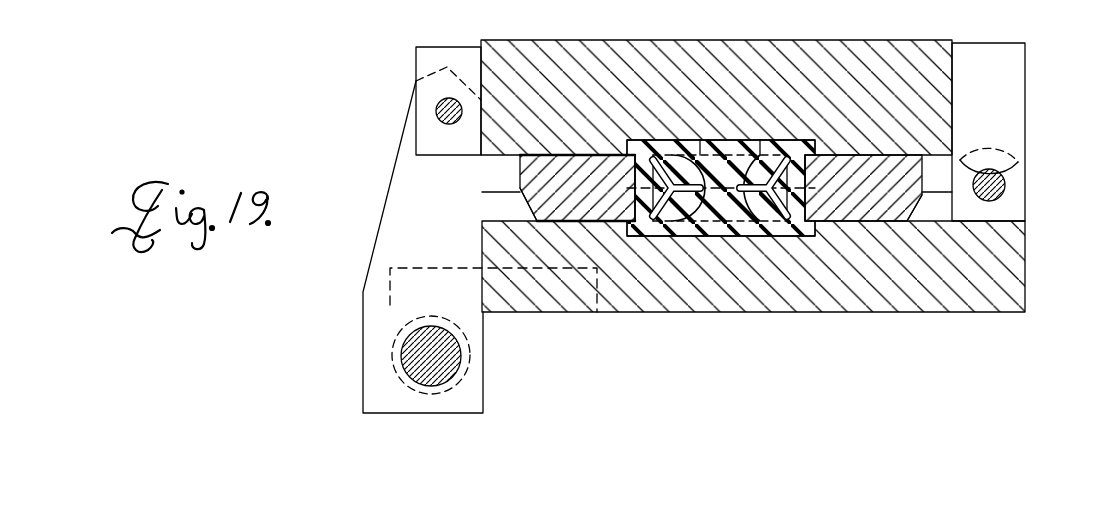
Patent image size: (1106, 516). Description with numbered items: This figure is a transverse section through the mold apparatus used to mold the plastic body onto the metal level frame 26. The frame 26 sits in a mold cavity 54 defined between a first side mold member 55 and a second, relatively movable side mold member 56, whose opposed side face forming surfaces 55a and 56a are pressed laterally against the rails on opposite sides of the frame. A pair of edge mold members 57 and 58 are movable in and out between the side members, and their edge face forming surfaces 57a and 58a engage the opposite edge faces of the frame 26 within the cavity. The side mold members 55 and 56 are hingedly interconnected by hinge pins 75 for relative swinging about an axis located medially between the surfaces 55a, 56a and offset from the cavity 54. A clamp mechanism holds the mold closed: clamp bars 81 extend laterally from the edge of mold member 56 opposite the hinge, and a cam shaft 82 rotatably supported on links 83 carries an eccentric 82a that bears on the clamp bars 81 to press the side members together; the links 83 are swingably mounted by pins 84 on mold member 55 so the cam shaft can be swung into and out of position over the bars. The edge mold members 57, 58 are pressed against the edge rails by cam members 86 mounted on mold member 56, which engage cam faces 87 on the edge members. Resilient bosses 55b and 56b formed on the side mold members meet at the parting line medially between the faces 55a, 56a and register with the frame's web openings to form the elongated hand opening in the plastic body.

The metal level frame 26 is at (672, 220).
The mold cavity 54 is at (670, 162).
The first side mold member 55 is at (947, 20).
The side face forming surface 55a is at (777, 155).
The boss 55b is at (727, 155).
The second side mold member 56 is at (827, 294).
The side face forming surface 56a is at (777, 210).
The boss 56b is at (715, 213).
The edge mold member 57 is at (870, 207).
The edge face forming surface 57a is at (790, 182).
The edge mold member 58 is at (578, 208).
The edge face forming surface 58a is at (640, 180).
The hinge pin 75 is at (1000, 190).
The clamp bar 81 is at (420, 310).
The cam shaft 82 is at (443, 371).
The eccentric 82a is at (468, 334).
The link 83 is at (392, 221).
The pin 84 is at (437, 113).
The cam member 86 is at (503, 203).
The cam face 87 is at (537, 222).